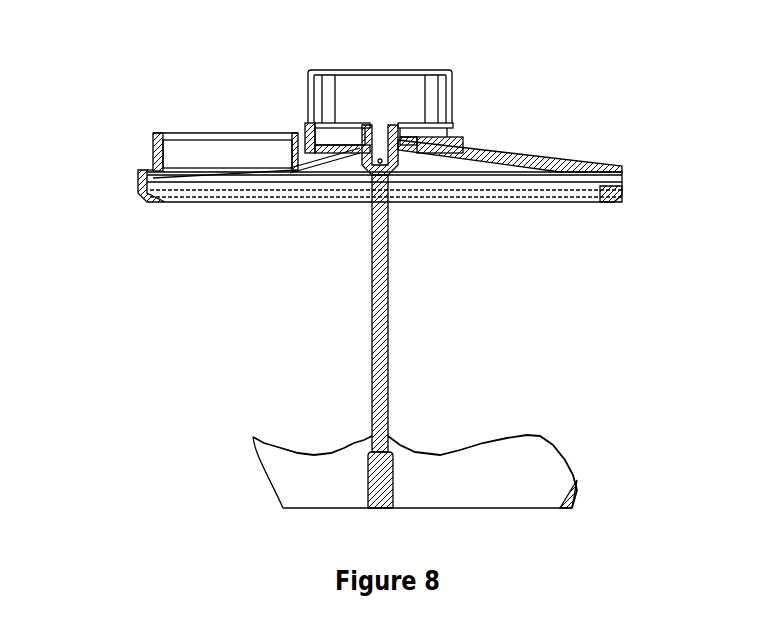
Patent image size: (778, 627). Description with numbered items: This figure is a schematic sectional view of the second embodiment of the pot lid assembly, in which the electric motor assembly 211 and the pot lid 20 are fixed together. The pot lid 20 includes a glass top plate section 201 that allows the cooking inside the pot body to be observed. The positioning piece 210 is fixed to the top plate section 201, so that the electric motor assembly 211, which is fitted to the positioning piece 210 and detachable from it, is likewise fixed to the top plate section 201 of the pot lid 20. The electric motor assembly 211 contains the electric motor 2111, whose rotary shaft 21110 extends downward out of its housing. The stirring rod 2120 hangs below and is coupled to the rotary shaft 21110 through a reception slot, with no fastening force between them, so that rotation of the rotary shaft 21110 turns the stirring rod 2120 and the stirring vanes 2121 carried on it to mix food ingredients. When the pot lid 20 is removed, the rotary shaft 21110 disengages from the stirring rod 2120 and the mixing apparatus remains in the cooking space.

The pot lid 20 is at (155, 165).
The top plate section 201 is at (550, 164).
The positioning piece 210 is at (310, 123).
The electric motor assembly 211 is at (405, 73).
The electric motor 2111 is at (369, 85).
The rotary shaft 21110 is at (345, 152).
The stirring rod 2120 is at (389, 327).
The stirring vanes 2121 is at (510, 477).